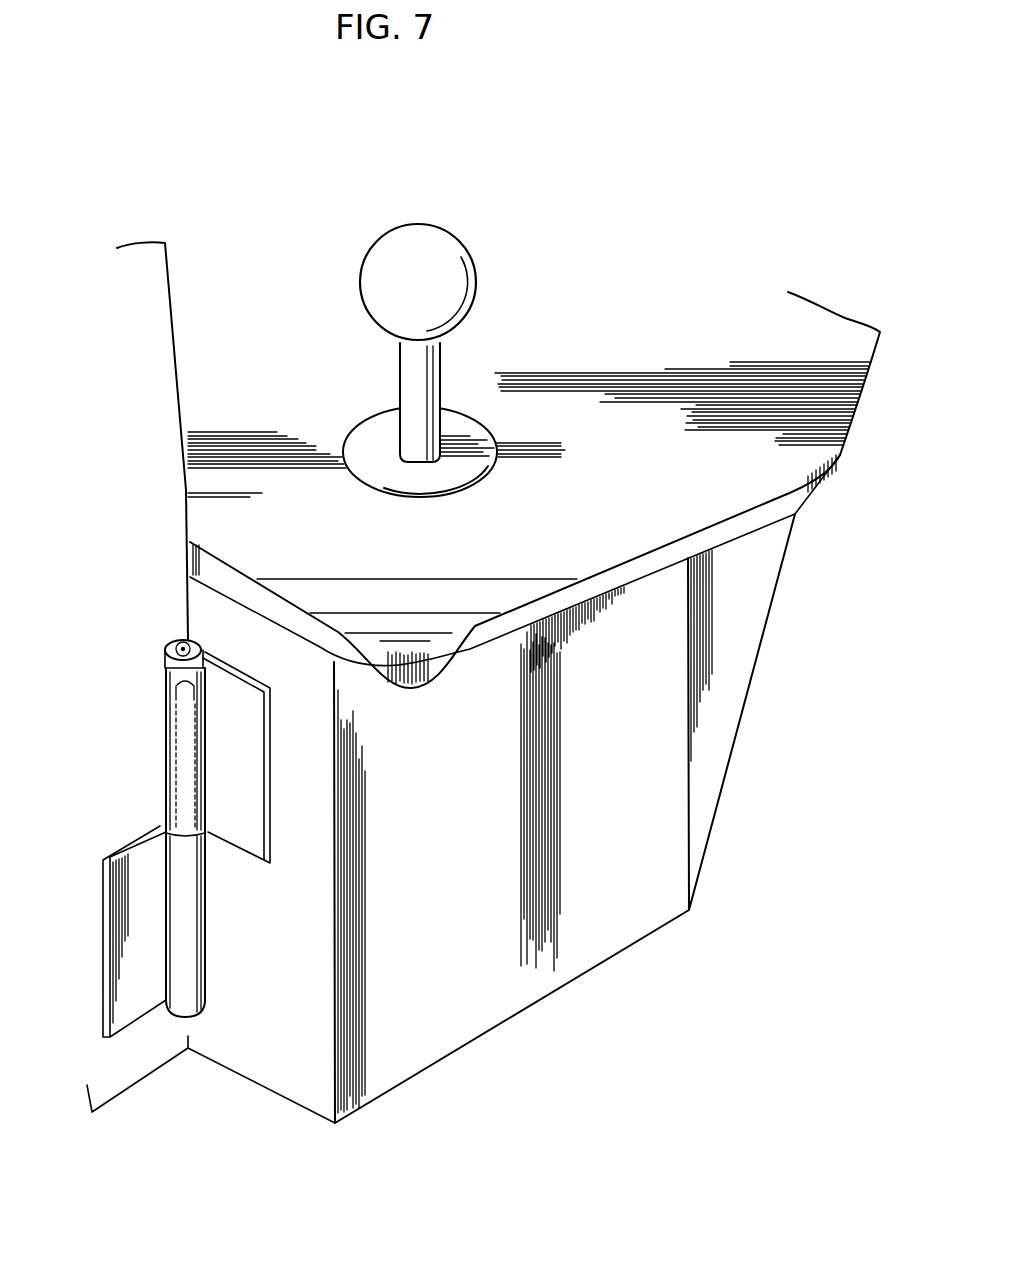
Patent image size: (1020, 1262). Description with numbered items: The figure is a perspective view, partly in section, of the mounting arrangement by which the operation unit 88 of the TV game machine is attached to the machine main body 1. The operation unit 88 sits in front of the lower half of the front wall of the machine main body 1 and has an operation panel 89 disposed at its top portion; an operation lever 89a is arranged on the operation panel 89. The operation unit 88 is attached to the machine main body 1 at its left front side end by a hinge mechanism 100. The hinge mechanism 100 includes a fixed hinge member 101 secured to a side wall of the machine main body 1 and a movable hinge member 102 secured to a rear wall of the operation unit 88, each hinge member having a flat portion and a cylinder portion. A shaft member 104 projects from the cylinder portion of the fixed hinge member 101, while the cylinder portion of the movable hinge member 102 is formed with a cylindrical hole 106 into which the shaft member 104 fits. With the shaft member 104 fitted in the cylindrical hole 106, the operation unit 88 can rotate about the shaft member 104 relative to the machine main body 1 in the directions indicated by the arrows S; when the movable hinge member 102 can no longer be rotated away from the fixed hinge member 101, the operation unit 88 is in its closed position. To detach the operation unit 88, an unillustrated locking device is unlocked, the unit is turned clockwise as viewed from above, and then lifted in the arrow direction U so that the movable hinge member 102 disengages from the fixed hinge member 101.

The machine main body 1 is at (153, 330).
The operation unit 88 is at (798, 578).
The operation panel 89 is at (610, 413).
The operation lever 89a is at (449, 270).
The hinge mechanism 100 is at (200, 831).
The fixed hinge member 101 is at (132, 1003).
The movable hinge member 102 is at (237, 787).
The shaft member 104 is at (167, 800).
The cylindrical hole 106 is at (181, 643).
The arrows S is at (243, 639).
The arrow direction U is at (148, 777).